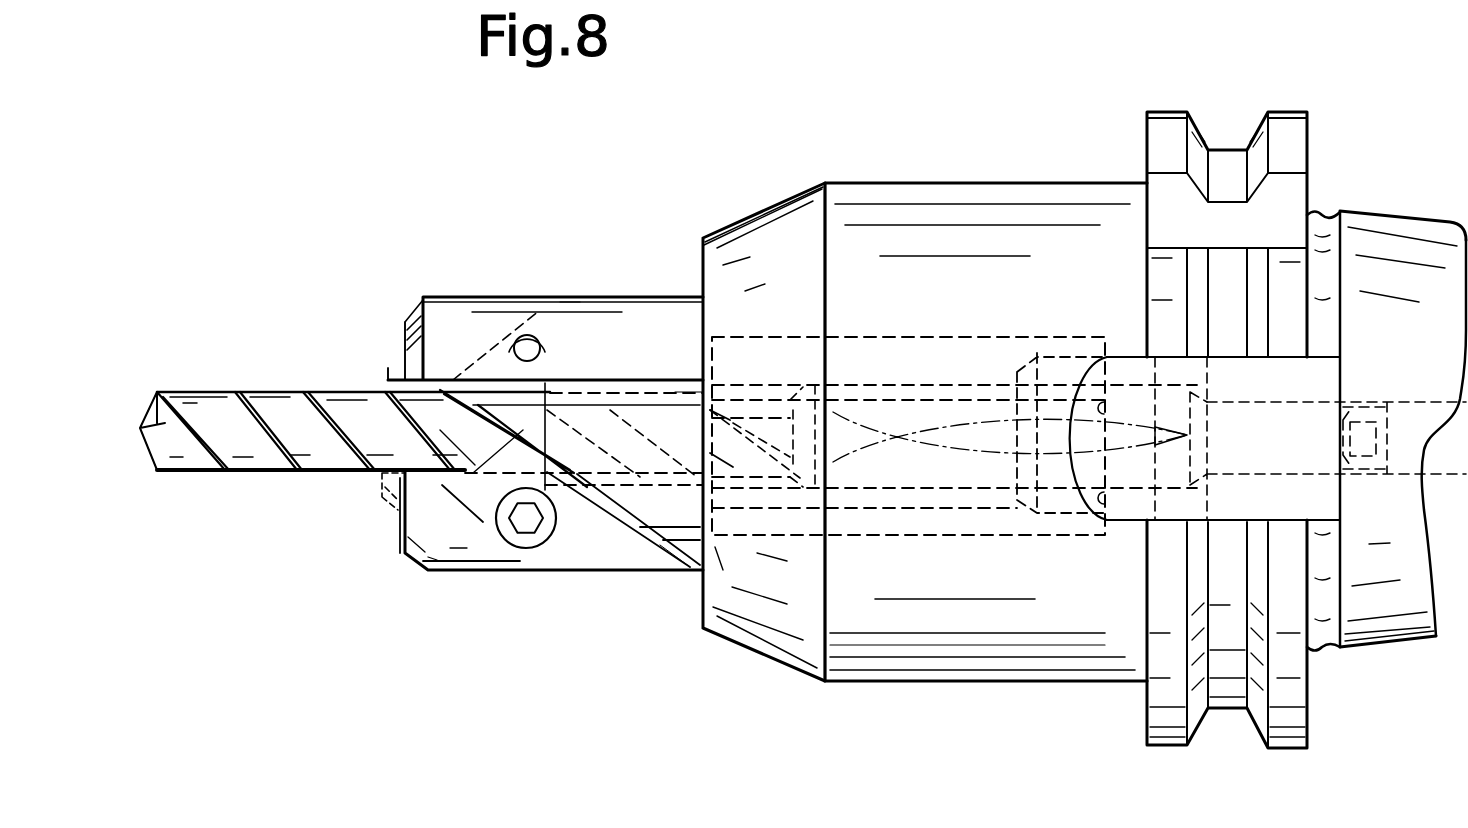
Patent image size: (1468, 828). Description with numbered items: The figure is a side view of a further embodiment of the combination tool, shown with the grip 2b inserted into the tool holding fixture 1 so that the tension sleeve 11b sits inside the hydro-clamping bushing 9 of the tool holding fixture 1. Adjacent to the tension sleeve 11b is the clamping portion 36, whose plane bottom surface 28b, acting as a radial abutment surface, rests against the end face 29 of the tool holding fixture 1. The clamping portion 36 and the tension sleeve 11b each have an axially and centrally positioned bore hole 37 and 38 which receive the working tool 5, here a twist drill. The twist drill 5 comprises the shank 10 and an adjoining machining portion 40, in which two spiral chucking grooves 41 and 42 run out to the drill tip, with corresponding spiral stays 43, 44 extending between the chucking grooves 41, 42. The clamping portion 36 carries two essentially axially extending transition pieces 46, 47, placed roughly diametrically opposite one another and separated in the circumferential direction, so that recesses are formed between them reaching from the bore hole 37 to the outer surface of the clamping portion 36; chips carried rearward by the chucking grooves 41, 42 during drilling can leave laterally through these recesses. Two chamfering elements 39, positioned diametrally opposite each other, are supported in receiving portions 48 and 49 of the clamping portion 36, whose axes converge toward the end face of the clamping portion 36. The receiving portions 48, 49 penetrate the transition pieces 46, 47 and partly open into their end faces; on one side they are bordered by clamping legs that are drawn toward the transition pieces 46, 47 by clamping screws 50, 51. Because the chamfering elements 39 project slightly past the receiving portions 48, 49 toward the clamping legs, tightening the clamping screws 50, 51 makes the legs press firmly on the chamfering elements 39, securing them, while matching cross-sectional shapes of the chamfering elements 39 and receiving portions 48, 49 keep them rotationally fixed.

The tool holding fixture 1 is at (892, 270).
The grip 2b is at (568, 330).
The working tool 5 is at (160, 462).
The hydro-clamping bushing 9 is at (1010, 540).
The shank 10 is at (748, 617).
The tension sleeve 11b is at (957, 350).
The plane bottom surface 28b is at (693, 563).
The end face 29 is at (703, 280).
The clamping portion 36 is at (682, 388).
The bore hole 37 is at (662, 380).
The bore hole 38 is at (913, 490).
The chamfering element 39 is at (385, 500).
The machining portion 40 is at (212, 410).
The spiral chucking groove 41 is at (473, 383).
The spiral chucking groove 42 is at (352, 443).
The spiral stay 43 is at (432, 462).
The spiral stay 44 is at (227, 452).
The transition piece 46 is at (600, 330).
The transition piece 47 is at (590, 540).
The receiving portion 48 is at (434, 297).
The receiving portion 49 is at (433, 556).
The clamping screw 50 is at (527, 334).
The clamping screw 51 is at (527, 525).